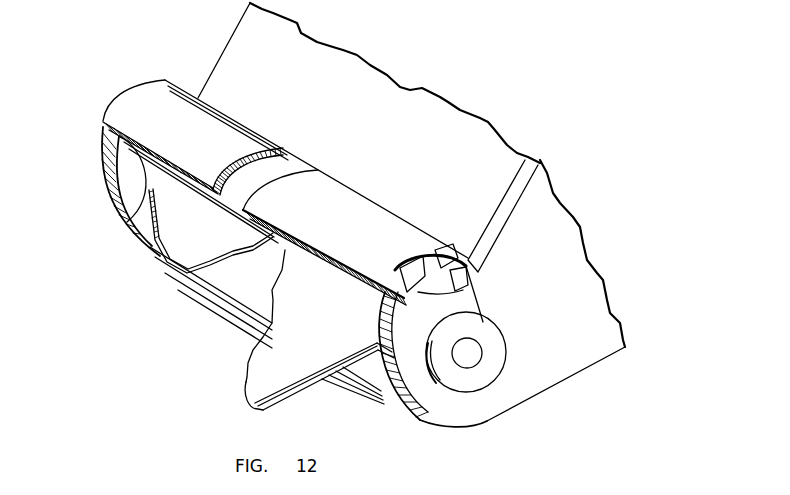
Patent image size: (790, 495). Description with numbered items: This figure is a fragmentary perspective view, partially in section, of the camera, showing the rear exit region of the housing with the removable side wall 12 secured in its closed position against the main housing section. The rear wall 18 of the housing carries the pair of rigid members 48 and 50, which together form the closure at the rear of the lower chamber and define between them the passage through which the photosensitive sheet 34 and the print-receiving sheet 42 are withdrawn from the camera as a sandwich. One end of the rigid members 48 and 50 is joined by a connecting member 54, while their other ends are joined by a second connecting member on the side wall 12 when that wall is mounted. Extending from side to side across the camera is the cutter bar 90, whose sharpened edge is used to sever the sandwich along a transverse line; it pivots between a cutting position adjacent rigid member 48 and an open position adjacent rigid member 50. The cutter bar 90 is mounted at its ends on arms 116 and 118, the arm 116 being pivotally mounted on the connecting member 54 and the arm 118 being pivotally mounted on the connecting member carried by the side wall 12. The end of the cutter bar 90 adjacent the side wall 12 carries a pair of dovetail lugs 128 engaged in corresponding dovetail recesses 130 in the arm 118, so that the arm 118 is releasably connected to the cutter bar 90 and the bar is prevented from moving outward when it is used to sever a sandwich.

The removable side wall 12 is at (550, 284).
The rear wall 18 is at (378, 112).
The photosensitive sheet 34 is at (322, 335).
The print-receiving sheet 42 is at (264, 411).
The rigid member 48 is at (283, 158).
The rigid member 50 is at (250, 287).
The connecting member 54 is at (112, 172).
The cutter bar 90 is at (367, 213).
The arm 116 is at (108, 130).
The arm 118 is at (447, 320).
The lugs 128 is at (468, 291).
The recesses 130 is at (452, 245).